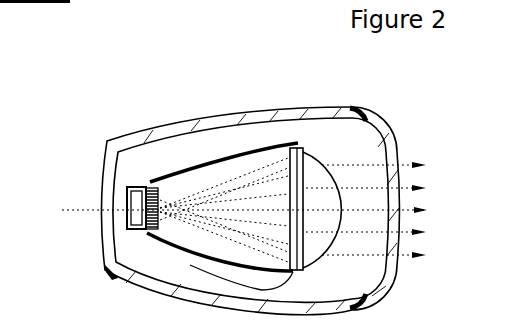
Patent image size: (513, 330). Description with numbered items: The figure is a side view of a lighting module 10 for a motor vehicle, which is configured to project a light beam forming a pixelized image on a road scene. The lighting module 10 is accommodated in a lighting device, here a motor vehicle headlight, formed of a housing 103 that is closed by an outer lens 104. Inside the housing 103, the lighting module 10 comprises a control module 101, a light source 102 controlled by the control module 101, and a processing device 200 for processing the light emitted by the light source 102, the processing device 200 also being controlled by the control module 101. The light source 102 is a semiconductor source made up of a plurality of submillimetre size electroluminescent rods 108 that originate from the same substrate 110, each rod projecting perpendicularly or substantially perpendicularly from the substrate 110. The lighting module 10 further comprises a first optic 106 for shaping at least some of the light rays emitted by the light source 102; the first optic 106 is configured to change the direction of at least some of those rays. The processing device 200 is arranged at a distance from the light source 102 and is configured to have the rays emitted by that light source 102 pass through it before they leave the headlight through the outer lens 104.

The lighting module 10 is at (112, 199).
The control module 101 is at (141, 233).
The light source 102 is at (116, 224).
The housing 103 is at (292, 110).
The outer lens 104 is at (380, 119).
The first optic 106 is at (308, 262).
The electroluminescent rods 108 is at (155, 186).
The substrate 110 is at (142, 189).
The processing device 200 is at (303, 157).